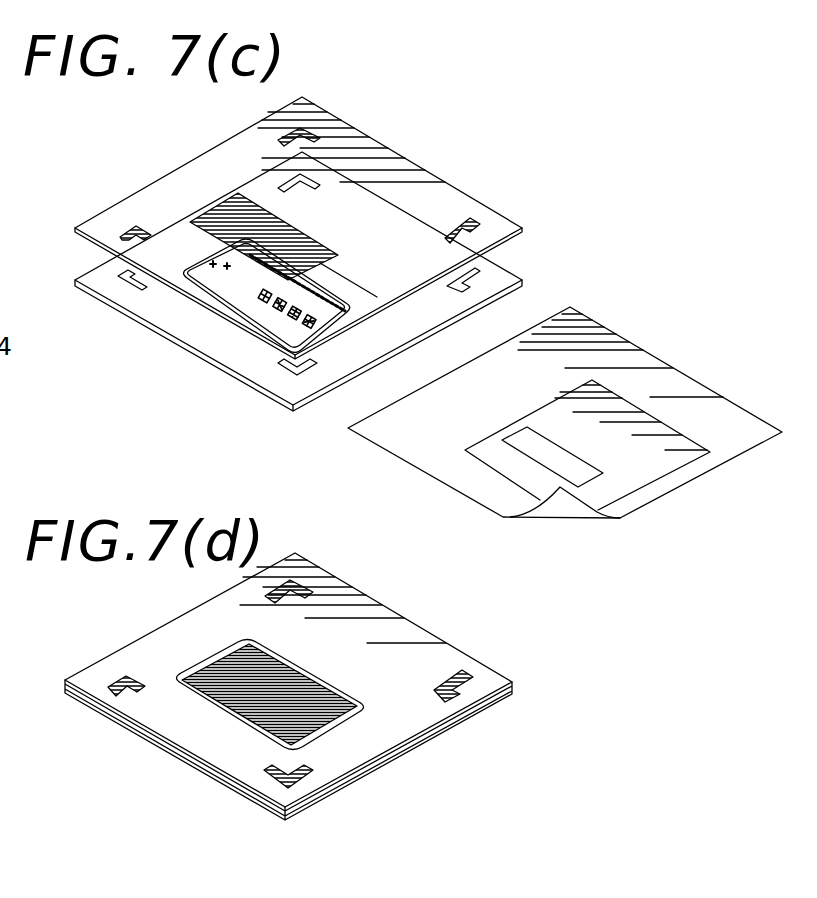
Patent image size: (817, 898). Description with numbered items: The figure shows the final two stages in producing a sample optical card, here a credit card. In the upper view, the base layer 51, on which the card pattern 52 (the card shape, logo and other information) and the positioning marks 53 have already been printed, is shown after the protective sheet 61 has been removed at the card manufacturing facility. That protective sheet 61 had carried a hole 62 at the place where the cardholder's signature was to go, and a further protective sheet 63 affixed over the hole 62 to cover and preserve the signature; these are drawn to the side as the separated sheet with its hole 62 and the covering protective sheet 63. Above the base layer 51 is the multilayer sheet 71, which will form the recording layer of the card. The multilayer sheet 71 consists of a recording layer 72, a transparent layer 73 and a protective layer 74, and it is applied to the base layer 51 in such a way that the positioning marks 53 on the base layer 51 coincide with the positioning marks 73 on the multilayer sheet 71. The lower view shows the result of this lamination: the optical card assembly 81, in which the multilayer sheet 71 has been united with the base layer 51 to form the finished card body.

In FIG. 7C, the base layer 51 is at (268, 378).
In FIG. 7C, the card pattern 52 is at (207, 305).
In FIG. 7C, the positioning marks 53 is at (305, 370).
In FIG. 7C, the protective sheet 61 is at (613, 348).
In FIG. 7C, the hole 62 is at (520, 440).
In FIG. 7C, the protective sheet 63 is at (652, 465).
In FIG. 7C, the multilayer sheet 71 is at (497, 190).
In FIG. 7C, the recording layer 72 is at (222, 205).
In FIG. 7C, the transparent layer 73 is at (78, 238).
In FIG. 7C, the protective layer 74 is at (155, 190).
In FIG. 7D, the optical card assembly 81 is at (308, 838).